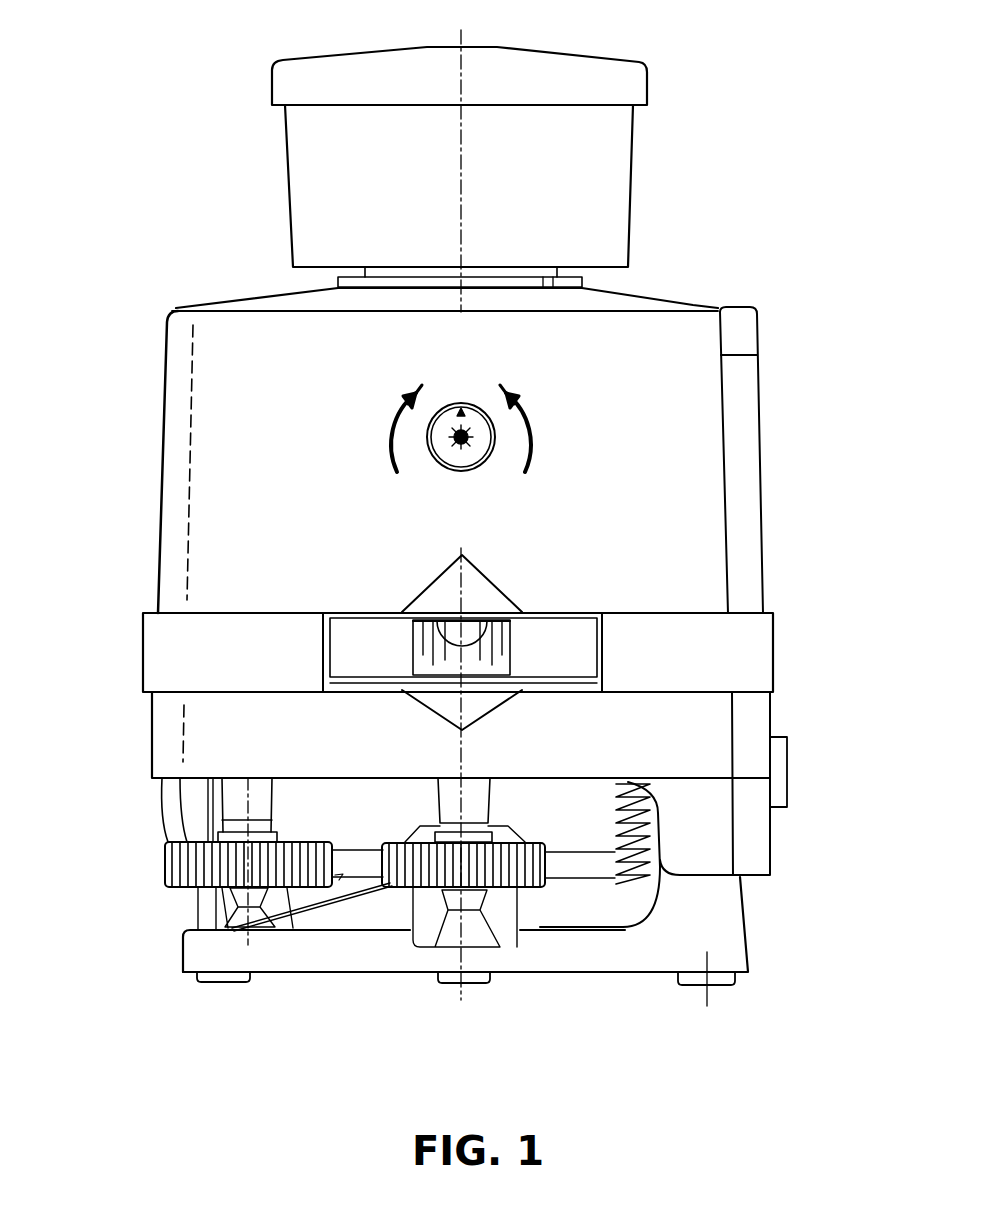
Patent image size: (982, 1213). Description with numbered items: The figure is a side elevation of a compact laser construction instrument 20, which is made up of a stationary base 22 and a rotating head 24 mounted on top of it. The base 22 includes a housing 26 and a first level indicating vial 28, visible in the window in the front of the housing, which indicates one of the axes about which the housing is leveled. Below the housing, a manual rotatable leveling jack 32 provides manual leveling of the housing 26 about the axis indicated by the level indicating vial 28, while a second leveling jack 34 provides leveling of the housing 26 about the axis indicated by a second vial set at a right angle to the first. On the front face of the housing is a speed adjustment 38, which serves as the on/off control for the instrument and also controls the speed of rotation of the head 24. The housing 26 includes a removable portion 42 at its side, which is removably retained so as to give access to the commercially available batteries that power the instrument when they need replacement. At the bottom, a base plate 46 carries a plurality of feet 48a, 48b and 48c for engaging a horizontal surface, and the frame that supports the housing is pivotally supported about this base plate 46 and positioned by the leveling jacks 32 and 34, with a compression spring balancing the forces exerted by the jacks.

The compact laser construction instrument 20 is at (682, 300).
The stationary base 22 is at (166, 307).
The rotating head 24 is at (563, 55).
The housing 26 is at (162, 415).
The first level indicating vial 28 is at (602, 615).
The manual rotatable leveling jack 32 is at (288, 890).
The leveling jack 34 is at (505, 943).
The speed adjustment 38 is at (428, 447).
The removable portion 42 is at (760, 445).
The base plate 46 is at (272, 972).
The foot 48a is at (687, 988).
The foot 48b is at (440, 993).
The foot 48c is at (213, 983).